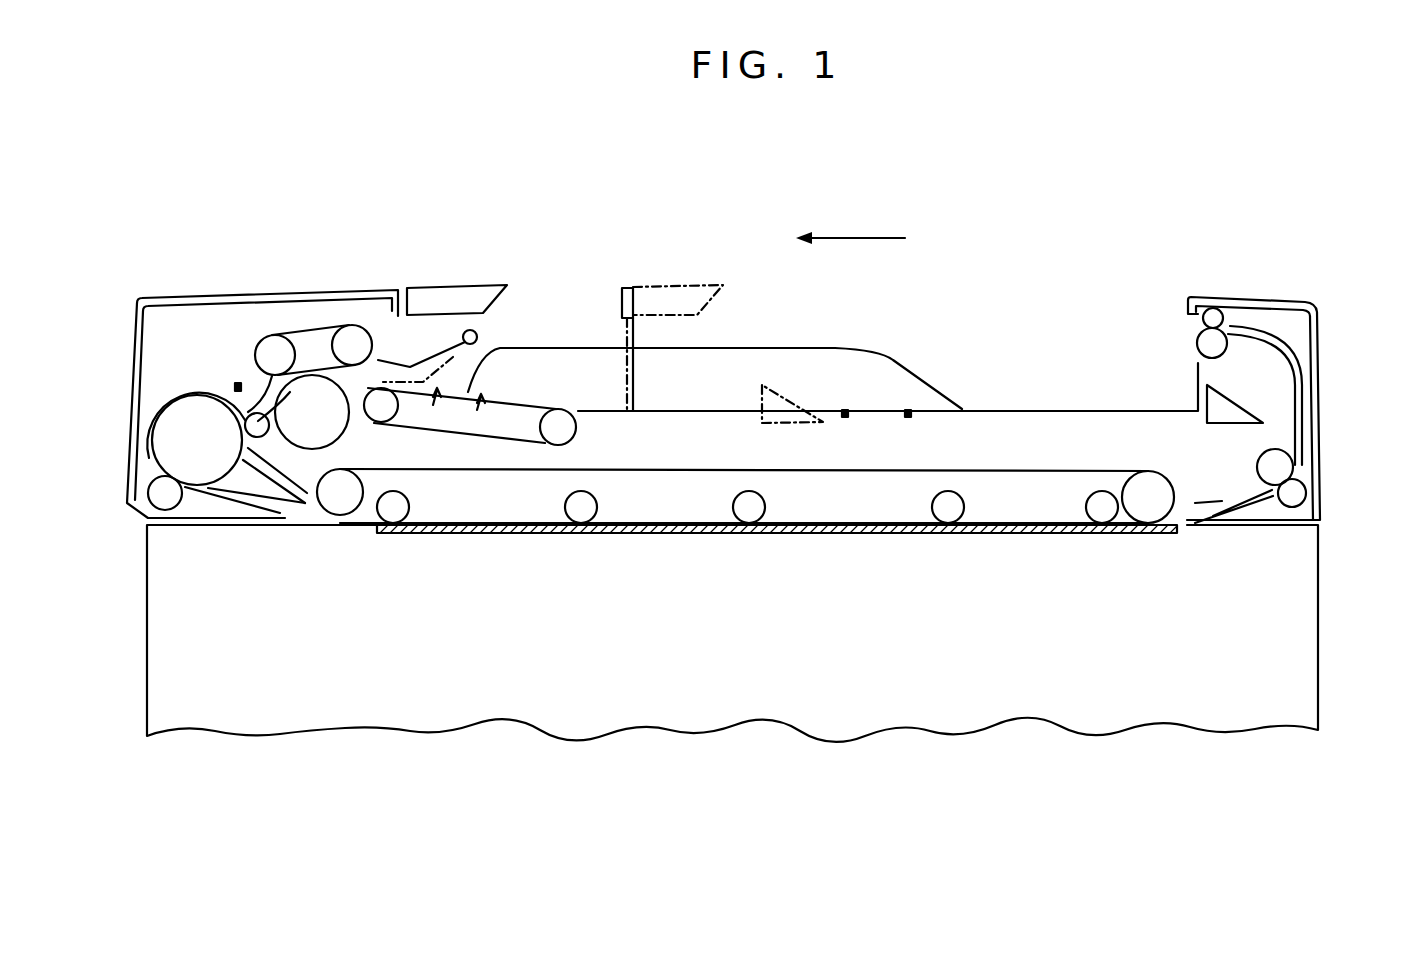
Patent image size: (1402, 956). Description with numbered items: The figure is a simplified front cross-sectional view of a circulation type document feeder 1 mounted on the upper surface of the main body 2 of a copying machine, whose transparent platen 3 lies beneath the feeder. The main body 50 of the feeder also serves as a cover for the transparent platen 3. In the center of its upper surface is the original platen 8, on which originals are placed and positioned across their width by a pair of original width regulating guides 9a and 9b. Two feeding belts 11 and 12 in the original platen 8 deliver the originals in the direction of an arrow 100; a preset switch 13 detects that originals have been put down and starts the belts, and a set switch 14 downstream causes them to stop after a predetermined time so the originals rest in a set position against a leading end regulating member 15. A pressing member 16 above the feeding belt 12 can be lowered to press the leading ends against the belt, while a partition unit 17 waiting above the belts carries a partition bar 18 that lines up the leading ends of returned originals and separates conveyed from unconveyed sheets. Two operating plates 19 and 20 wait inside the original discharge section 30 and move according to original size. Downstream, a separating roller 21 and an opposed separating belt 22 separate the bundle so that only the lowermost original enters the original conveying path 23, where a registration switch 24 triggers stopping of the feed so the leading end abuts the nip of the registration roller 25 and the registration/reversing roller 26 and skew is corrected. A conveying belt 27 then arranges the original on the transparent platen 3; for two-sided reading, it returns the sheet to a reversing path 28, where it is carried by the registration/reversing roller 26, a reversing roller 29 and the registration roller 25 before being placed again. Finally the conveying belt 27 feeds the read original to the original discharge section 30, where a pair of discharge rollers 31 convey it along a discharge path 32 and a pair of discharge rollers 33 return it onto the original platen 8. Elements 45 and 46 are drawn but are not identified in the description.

The circulation type document feeder 1 is at (232, 281).
The main body of the copying machine 2 is at (1293, 605).
The transparent platen 3 is at (1048, 535).
The original platen 8 is at (1027, 409).
The original width regulating guide 9a is at (715, 341).
The original width regulating guide 9b is at (833, 347).
The feeding belt 11 is at (516, 426).
The feeding belt 12 is at (552, 444).
The preset switch 13 is at (478, 412).
The set switch 14 is at (433, 400).
The leading end regulating member 15 is at (370, 416).
The pressing member 16 is at (428, 357).
The partition unit 17 is at (437, 288).
The partition bar 18 is at (636, 388).
The operating plate 19 is at (1012, 444).
The operating plate 20 is at (818, 428).
The separating roller 21 is at (305, 437).
The separating belt 22 is at (313, 327).
The original conveying path 23 is at (260, 386).
The registration switch 24 is at (234, 385).
The registration roller 25 is at (258, 432).
The registration/reversing roller 26 is at (171, 429).
The conveying belt 27 is at (682, 467).
The reversing path 28 is at (156, 464).
The reversing roller 29 is at (168, 502).
The original discharge section 30 is at (1277, 299).
The discharge rollers 31 is at (1296, 492).
The discharge path 32 is at (1303, 395).
The discharge rollers 33 is at (1218, 345).
The sensor 45 is at (845, 410).
The sensor 46 is at (907, 410).
The main body of the circulation type document feeder 50 is at (133, 347).
The arrow 100 is at (865, 237).